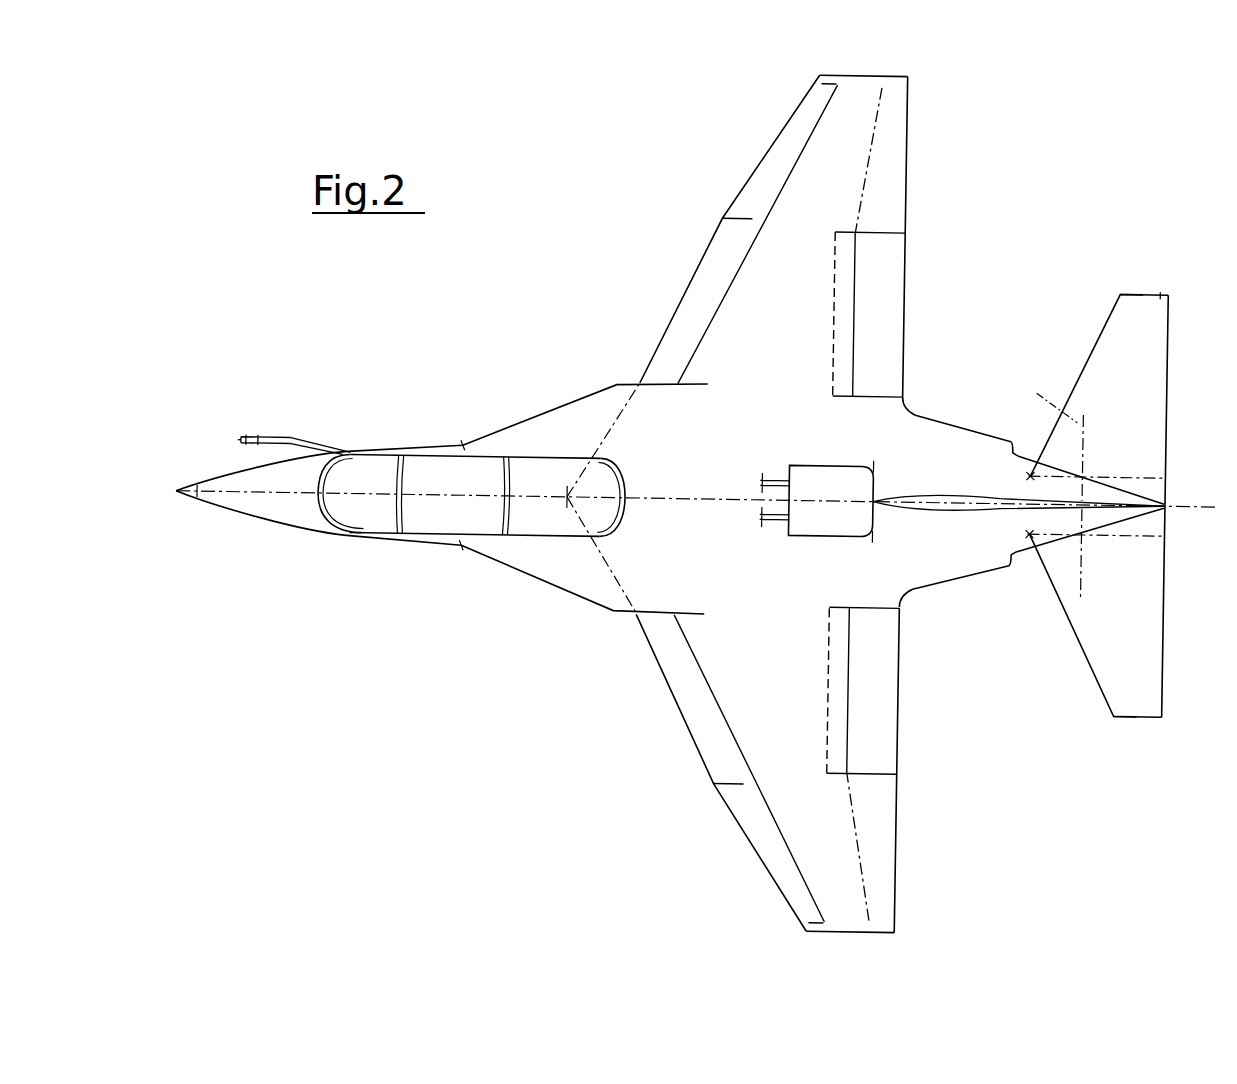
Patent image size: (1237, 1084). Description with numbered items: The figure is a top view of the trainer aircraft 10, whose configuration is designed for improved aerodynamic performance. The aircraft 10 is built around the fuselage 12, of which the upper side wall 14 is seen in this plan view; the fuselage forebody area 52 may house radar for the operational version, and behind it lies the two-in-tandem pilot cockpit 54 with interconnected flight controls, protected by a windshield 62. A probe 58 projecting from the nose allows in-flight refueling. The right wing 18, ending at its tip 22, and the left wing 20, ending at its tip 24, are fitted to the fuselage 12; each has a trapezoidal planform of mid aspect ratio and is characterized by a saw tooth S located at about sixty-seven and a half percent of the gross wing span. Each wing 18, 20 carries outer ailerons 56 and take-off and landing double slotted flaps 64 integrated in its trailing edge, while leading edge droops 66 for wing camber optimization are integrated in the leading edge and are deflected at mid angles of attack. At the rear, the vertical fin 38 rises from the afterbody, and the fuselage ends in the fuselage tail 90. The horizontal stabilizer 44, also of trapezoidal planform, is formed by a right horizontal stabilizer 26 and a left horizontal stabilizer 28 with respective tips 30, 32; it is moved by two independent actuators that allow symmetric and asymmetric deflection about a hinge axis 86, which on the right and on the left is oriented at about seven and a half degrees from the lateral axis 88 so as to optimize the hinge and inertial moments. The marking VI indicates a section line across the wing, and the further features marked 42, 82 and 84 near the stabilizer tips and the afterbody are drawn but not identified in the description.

The aircraft 10 is at (396, 394).
The fuselage 12 is at (660, 572).
The upper side wall 14 is at (633, 430).
The right wing 18 is at (808, 142).
The left wing 20 is at (785, 782).
The tip 22 is at (900, 76).
The tip 24 is at (885, 938).
The right horizontal stabilizer 26 is at (1137, 371).
The left horizontal stabilizer 28 is at (1135, 640).
The tip 30 is at (1131, 292).
The tip 32 is at (1128, 720).
The vertical fin 38 is at (920, 498).
The stabilizer tip 42 is at (1150, 308).
The horizontal stabilizer 44 is at (1162, 292).
The fuselage forebody area 52 is at (180, 492).
The pilot cockpit 54 is at (483, 470).
The outer ailerons 56 is at (898, 128).
The probe 58 is at (272, 440).
The windshield 62 is at (375, 520).
The take-off and landing double slotted flaps 64 is at (888, 250).
The leading edge droops 66 is at (772, 170).
The rear fuselage step 82 is at (1022, 455).
The rear fuselage edge 84 is at (944, 425).
The hinge axis 86 is at (1086, 458).
The lateral axis 88 is at (1050, 396).
The fuselage tail 90 is at (1167, 503).
The saw tooth S is at (735, 222).
The section line VI is at (675, 248).